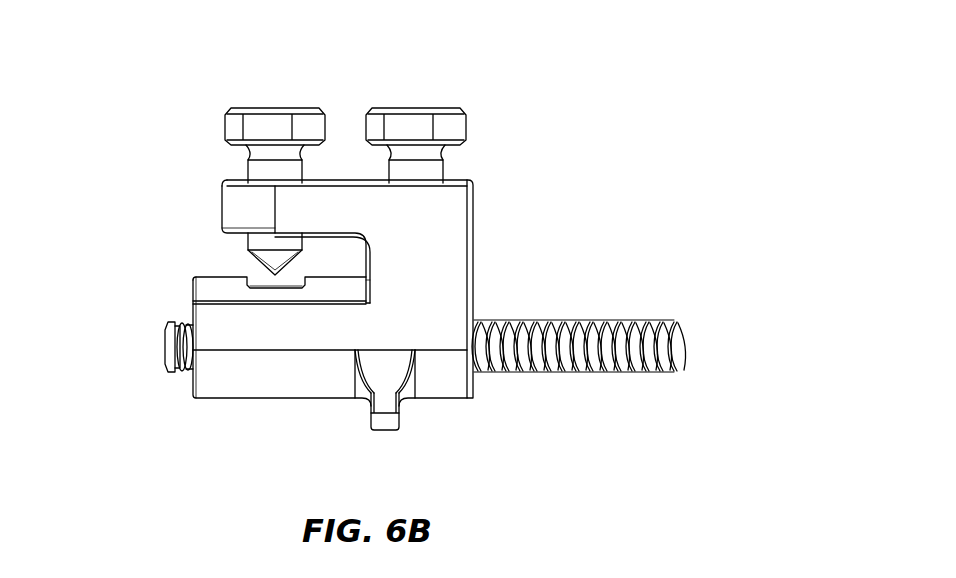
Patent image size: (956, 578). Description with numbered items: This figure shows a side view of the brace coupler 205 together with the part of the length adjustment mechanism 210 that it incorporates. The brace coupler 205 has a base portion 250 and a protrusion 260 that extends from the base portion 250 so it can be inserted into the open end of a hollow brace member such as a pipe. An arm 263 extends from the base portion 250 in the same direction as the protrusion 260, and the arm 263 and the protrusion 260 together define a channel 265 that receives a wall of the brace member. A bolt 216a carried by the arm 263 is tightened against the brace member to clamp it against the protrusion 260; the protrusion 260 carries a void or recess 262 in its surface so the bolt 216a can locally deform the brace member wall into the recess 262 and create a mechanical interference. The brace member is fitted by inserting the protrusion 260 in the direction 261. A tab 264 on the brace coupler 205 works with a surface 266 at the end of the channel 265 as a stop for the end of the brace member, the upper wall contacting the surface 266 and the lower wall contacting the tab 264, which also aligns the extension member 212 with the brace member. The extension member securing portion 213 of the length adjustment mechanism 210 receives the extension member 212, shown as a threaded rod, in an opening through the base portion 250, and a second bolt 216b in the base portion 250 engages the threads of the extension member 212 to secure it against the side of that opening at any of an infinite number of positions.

The brace coupler 205 is at (124, 40).
The length adjustment mechanism 210 is at (588, 124).
The extension member 212 is at (555, 372).
The extension member securing portion 213 is at (520, 274).
The bolt 216a is at (272, 108).
The bolt 216b is at (412, 107).
The base portion 250 is at (455, 233).
The protrusion 260 is at (195, 295).
The direction 261 is at (305, 424).
The void or recess 262 is at (261, 274).
The arm 263 is at (223, 195).
The tab 264 is at (385, 430).
The channel 265 is at (208, 240).
The surface 266 is at (367, 262).